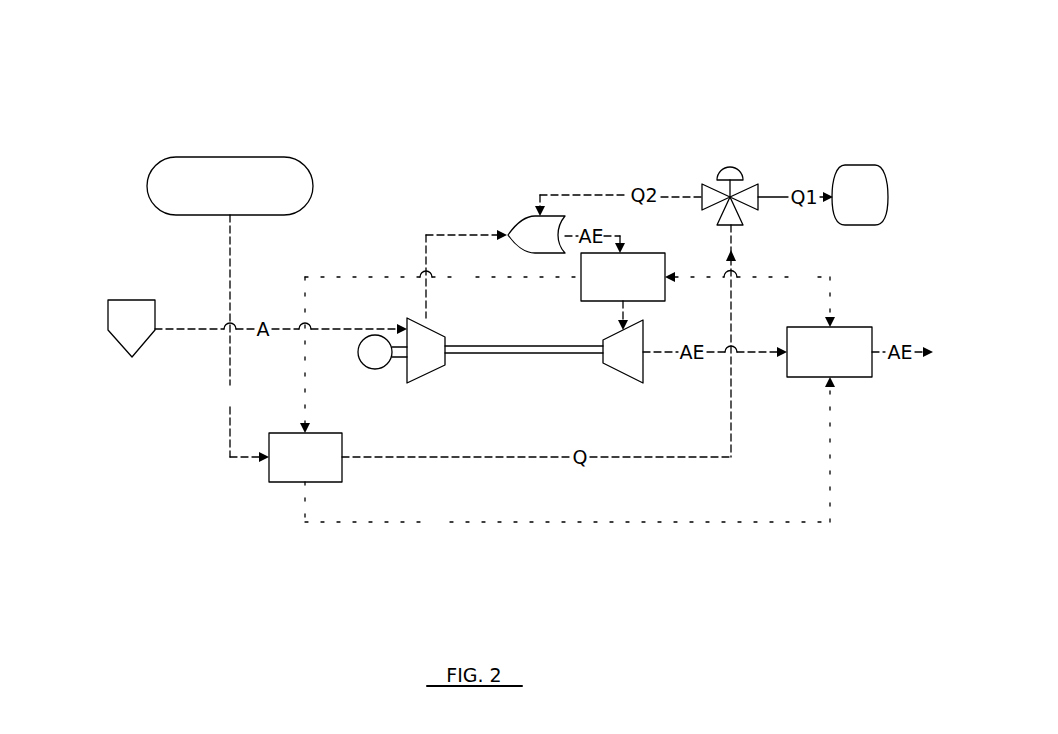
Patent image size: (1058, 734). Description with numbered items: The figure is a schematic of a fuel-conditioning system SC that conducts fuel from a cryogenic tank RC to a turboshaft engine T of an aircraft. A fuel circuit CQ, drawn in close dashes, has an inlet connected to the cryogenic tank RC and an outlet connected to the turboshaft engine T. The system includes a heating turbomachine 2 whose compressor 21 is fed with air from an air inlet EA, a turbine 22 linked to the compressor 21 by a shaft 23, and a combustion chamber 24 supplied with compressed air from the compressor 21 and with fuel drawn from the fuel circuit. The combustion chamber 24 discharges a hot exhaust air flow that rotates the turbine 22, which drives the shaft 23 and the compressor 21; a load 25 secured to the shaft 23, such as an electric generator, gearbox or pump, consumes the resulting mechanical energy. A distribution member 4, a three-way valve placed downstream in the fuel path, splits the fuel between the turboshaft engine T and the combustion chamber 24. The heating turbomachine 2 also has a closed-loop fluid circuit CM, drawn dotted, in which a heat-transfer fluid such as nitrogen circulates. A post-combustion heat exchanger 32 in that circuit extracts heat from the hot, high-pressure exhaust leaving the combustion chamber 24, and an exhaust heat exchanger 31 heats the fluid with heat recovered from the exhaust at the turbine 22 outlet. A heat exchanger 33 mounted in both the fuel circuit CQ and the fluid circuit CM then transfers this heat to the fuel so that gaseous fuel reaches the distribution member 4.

The heating turbomachine 2 is at (430, 212).
The distribution member 4 is at (731, 166).
The compressor 21 is at (426, 350).
The turbine 22 is at (623, 351).
The shaft 23 is at (533, 357).
The combustion chamber 24 is at (536, 224).
The load 25 is at (375, 370).
The exhaust heat exchanger 31 is at (829, 352).
The post-combustion heat exchanger 32 is at (623, 291).
The heat exchanger 33 is at (305, 457).
The fuel-conditioning system SC is at (122, 102).
The cryogenic tank RC is at (292, 157).
The fuel circuit CQ is at (226, 231).
The air inlet EA is at (131, 313).
The fluid circuit CM is at (369, 527).
The turboshaft engine T is at (860, 195).